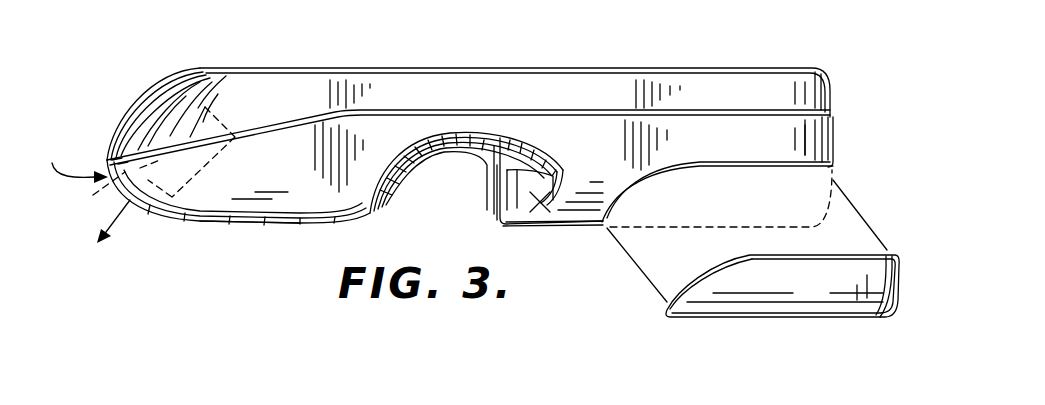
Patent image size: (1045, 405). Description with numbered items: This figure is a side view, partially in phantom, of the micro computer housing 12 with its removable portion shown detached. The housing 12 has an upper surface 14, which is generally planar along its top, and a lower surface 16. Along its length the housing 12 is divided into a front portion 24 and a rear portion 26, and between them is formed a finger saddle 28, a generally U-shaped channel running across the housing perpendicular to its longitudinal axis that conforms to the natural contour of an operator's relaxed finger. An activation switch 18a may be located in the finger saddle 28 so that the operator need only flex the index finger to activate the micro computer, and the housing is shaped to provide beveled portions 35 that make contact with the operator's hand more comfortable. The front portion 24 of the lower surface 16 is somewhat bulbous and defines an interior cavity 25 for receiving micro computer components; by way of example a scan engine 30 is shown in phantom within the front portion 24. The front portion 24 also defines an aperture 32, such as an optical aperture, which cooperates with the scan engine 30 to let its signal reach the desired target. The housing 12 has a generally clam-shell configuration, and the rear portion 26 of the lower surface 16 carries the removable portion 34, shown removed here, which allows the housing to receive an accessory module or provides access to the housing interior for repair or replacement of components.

The housing 12 is at (79, 157).
The upper surface 14 is at (421, 68).
The lower surface 16 is at (280, 212).
The activation switch 18a is at (480, 186).
The front portion 24 is at (196, 205).
The interior cavity 25 is at (250, 208).
The rear portion 26 is at (816, 147).
The finger saddle 28 is at (470, 158).
The scan engine 30 is at (140, 165).
The aperture 32 is at (142, 212).
The removable portion 34 is at (787, 295).
The beveled portions 35 is at (551, 230).